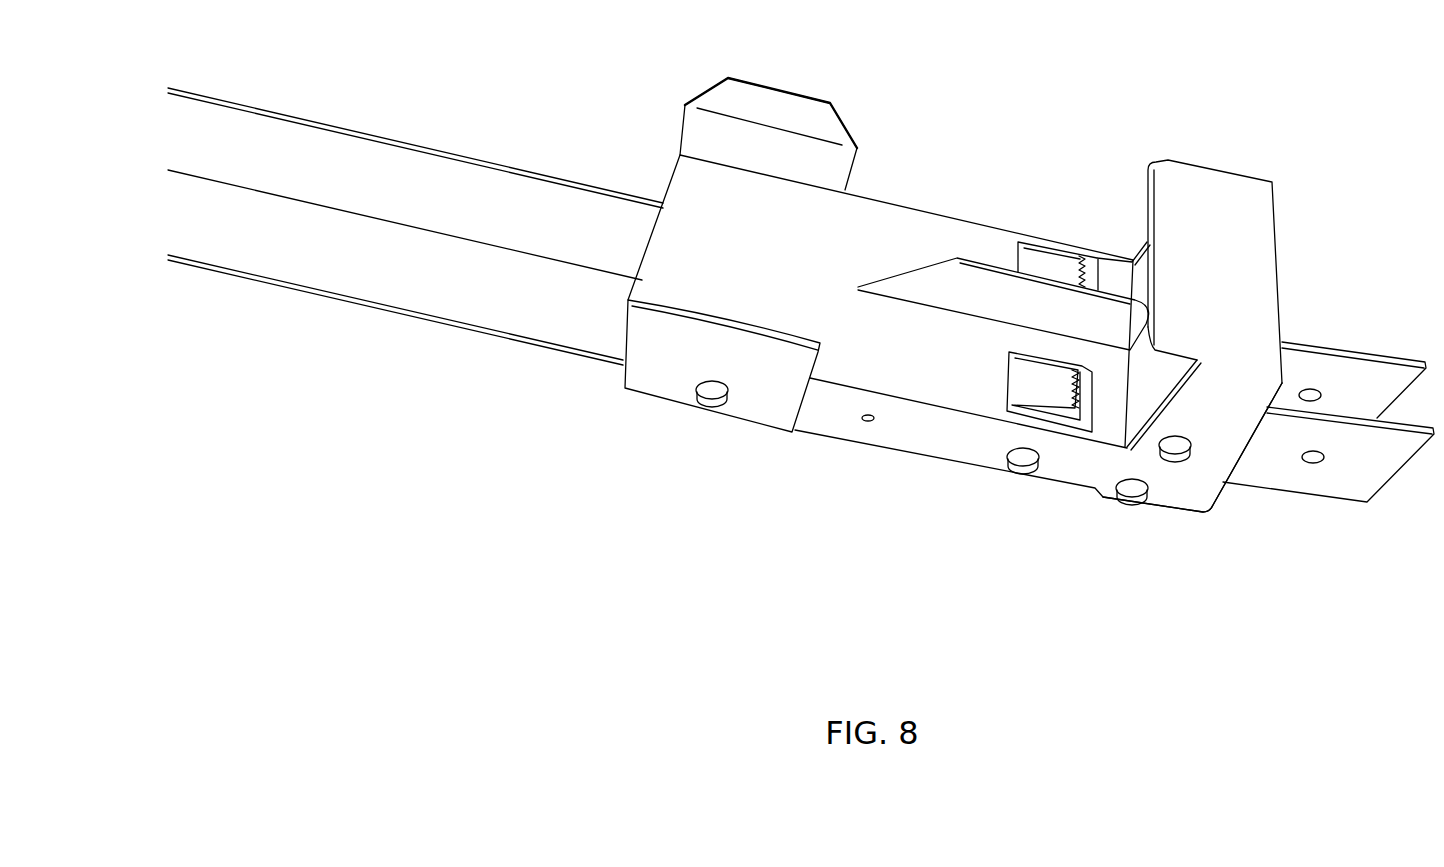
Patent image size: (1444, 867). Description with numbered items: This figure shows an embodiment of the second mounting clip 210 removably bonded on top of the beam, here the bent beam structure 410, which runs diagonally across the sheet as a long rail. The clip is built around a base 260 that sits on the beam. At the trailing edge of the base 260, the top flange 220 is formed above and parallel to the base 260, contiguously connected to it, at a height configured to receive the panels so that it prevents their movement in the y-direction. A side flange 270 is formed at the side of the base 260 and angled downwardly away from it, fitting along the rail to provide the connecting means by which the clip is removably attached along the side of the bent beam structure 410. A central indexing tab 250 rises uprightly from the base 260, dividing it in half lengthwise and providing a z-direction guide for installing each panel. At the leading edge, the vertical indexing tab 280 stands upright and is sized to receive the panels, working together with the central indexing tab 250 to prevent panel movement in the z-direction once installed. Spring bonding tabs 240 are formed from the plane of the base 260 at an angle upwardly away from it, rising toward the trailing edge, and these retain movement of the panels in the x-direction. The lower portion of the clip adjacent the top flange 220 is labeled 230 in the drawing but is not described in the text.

The second mounting clip 210 is at (840, 605).
The top flange 220 is at (1162, 180).
The lower mounting plate 230 is at (1190, 498).
The spring bonding tabs 240 is at (1023, 396).
The central indexing tab 250 is at (918, 292).
The base 260 is at (957, 378).
The side flange 270 is at (657, 368).
The vertical indexing tab 280 is at (733, 106).
The bent beam structure 410 is at (488, 181).